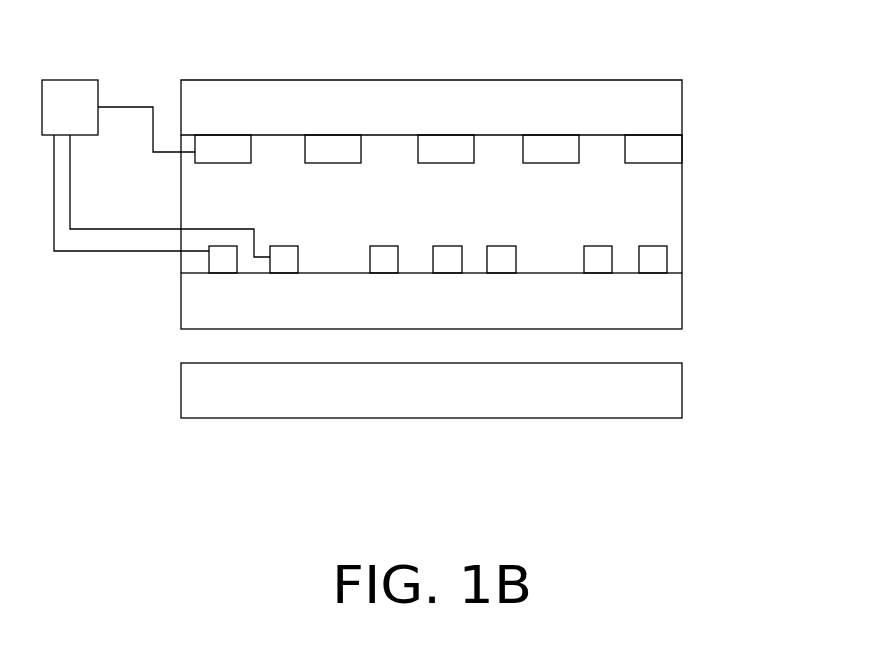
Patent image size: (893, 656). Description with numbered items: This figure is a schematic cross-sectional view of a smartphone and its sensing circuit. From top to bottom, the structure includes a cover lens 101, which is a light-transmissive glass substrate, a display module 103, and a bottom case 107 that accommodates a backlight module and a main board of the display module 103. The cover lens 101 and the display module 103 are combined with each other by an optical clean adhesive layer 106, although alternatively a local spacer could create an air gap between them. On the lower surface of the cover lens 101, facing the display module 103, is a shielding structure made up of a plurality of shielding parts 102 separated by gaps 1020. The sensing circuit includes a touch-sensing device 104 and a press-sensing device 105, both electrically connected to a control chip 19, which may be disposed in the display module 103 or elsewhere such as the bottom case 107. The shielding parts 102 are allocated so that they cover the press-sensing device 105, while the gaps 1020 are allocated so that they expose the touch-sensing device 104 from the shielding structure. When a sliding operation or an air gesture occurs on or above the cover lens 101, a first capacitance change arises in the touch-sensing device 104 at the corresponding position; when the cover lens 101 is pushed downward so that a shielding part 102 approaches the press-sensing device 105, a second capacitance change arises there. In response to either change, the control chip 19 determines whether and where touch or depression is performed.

The control chip 19 is at (68, 95).
The cover lens 101 is at (667, 101).
The shielding parts 102 is at (232, 148).
The gaps 1020 is at (605, 150).
The display module 103 is at (667, 302).
The touch-sensing device 104 is at (384, 260).
The press-sensing device 105 is at (215, 260).
The optical clean adhesive layer 106 is at (223, 198).
The bottom case 107 is at (667, 393).